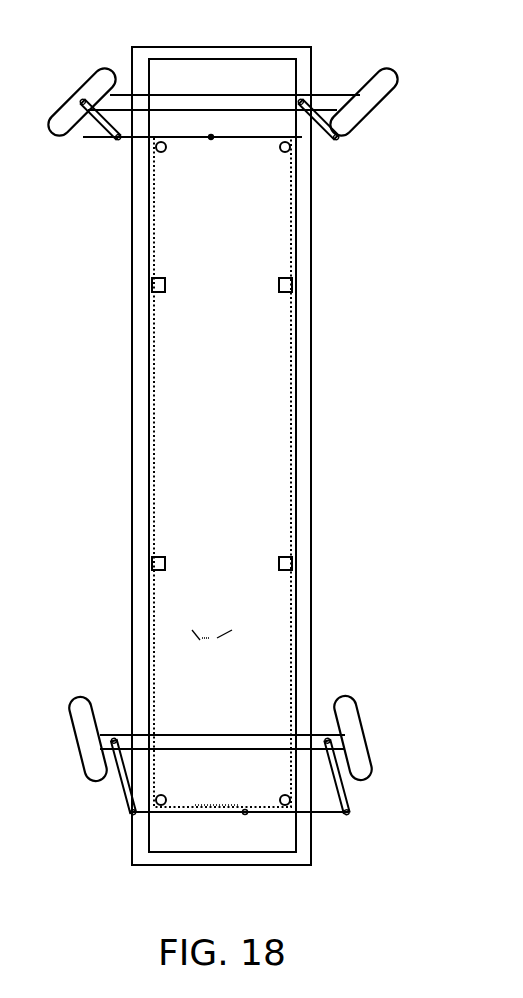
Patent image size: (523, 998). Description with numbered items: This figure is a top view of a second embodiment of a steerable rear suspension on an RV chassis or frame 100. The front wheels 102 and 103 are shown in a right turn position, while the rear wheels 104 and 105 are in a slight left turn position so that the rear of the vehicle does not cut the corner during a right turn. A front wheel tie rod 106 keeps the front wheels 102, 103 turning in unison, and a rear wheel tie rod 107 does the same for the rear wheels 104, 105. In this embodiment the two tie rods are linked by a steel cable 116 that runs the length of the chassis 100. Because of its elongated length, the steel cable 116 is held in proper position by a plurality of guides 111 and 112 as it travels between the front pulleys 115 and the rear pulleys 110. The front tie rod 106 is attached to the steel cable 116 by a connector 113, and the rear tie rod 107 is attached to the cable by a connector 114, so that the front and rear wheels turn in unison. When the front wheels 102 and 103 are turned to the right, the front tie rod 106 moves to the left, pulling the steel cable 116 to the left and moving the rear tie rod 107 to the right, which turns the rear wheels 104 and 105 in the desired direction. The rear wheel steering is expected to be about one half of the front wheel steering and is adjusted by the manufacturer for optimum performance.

The chassis 100 is at (132, 487).
The front wheel 102 is at (95, 75).
The front wheel 103 is at (357, 122).
The rear wheel 104 is at (82, 752).
The rear wheel 105 is at (363, 728).
The front wheel tie rod 106 is at (118, 148).
The rear wheel tie rod 107 is at (335, 812).
The rear pulleys 110 is at (283, 795).
The guides 111 is at (279, 292).
The guides 112 is at (279, 568).
The connector 113 is at (211, 137).
The connector 114 is at (245, 813).
The front pulleys 115 is at (282, 152).
The steel cable 116 is at (291, 422).